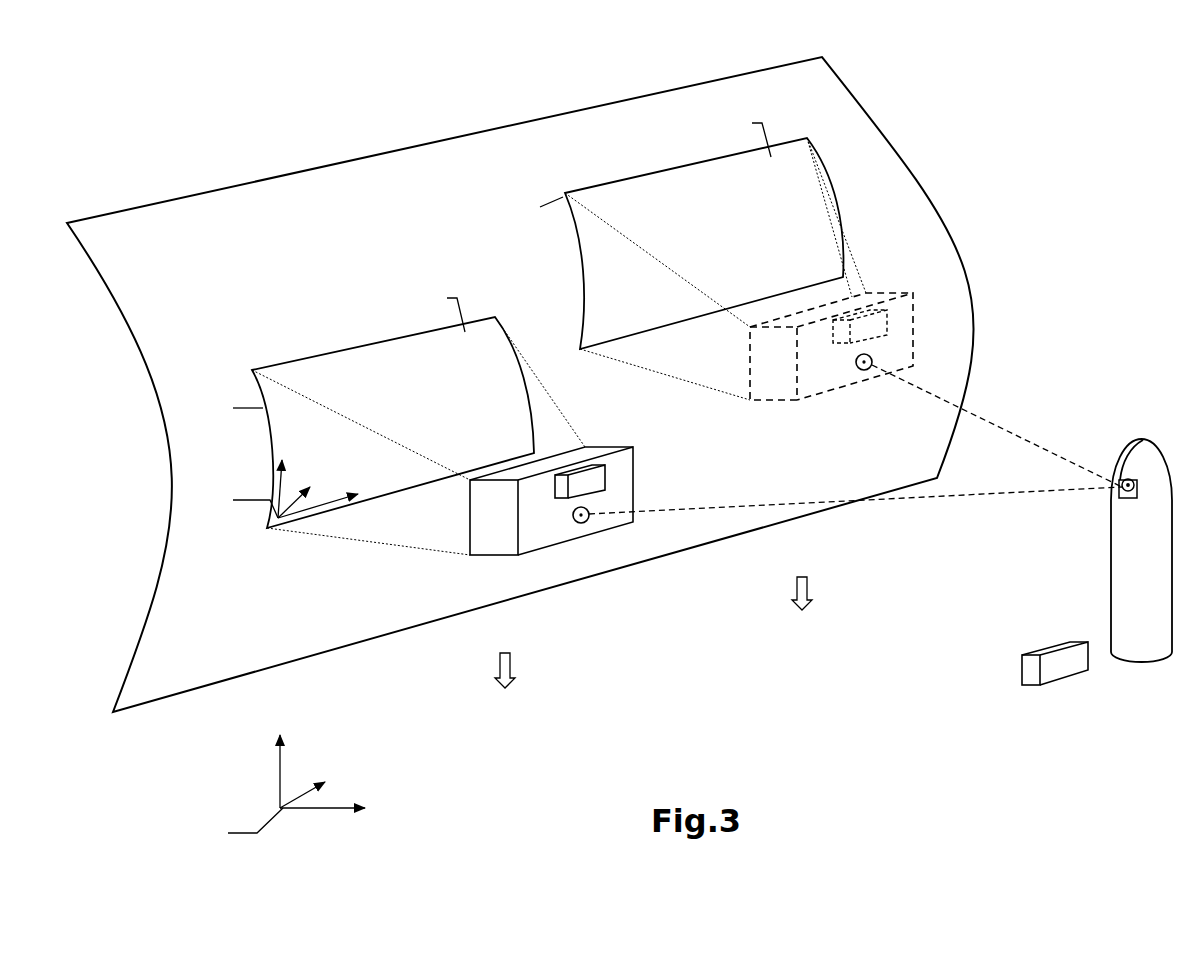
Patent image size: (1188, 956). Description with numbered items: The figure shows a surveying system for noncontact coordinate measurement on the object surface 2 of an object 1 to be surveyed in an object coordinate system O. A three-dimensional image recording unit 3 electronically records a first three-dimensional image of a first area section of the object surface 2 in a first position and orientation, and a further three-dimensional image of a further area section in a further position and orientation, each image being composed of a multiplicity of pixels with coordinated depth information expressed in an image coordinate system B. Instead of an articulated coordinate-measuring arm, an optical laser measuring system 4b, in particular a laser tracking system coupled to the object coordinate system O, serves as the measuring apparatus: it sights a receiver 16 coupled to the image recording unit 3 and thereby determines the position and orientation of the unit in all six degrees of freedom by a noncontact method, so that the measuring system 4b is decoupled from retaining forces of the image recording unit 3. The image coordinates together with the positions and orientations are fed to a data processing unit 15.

The object 1 is at (210, 150).
The object surface 2 is at (395, 167).
The 3D image recording unit 3 is at (552, 527).
The receiver 16 is at (583, 520).
The optical laser measuring system 4b is at (1125, 567).
The data processing unit 15 is at (1068, 670).